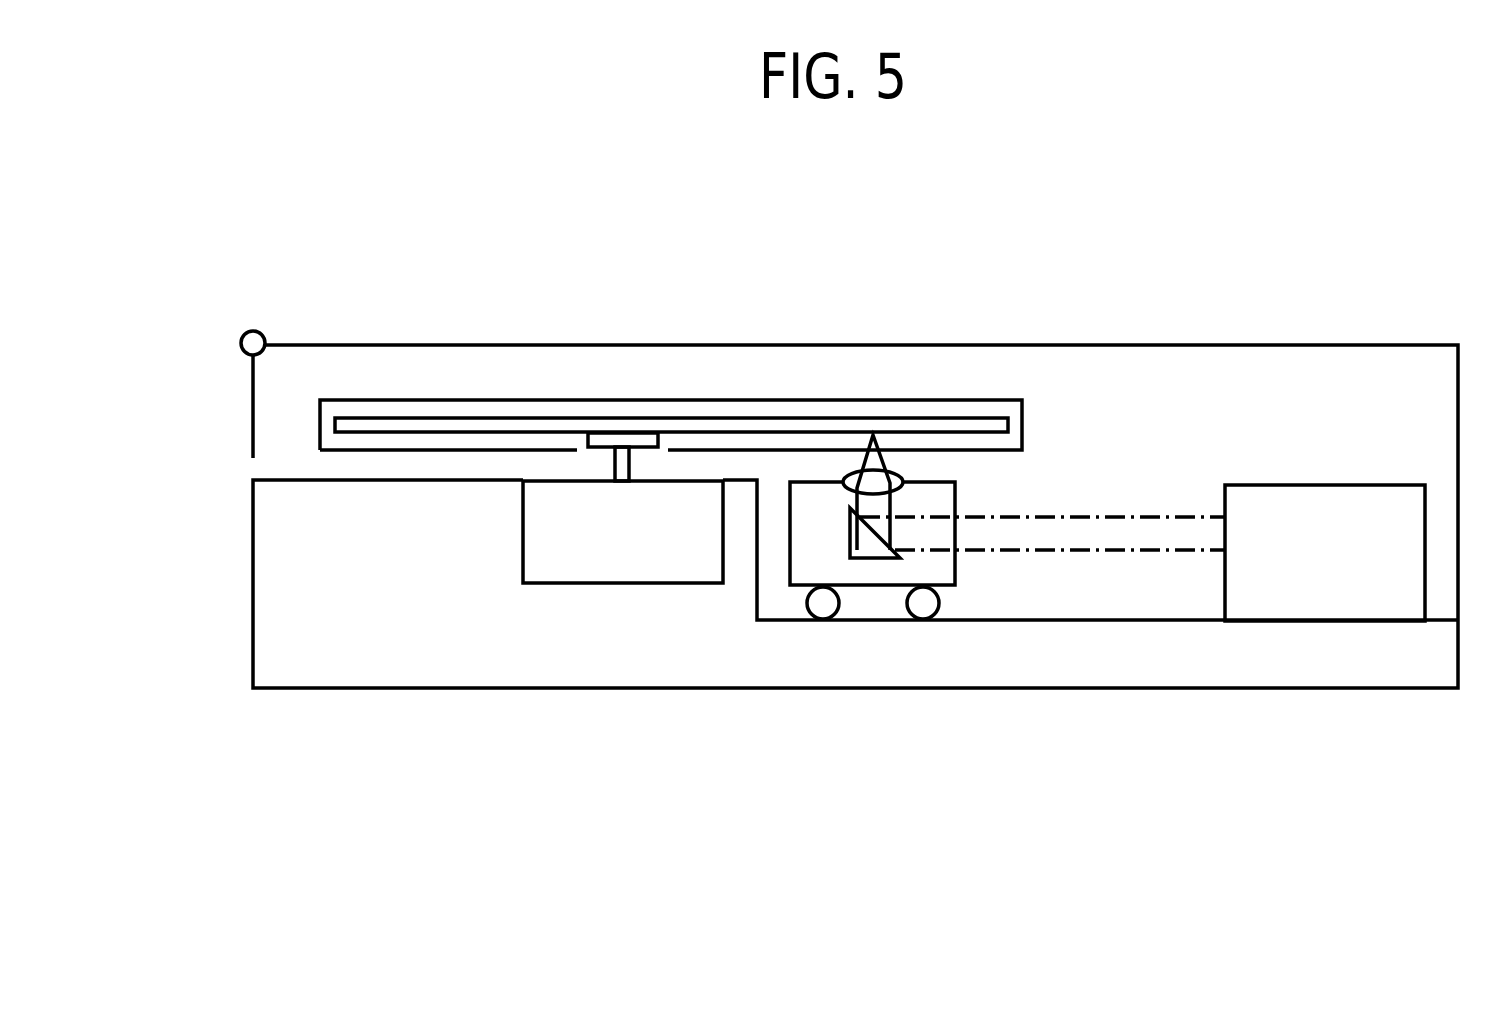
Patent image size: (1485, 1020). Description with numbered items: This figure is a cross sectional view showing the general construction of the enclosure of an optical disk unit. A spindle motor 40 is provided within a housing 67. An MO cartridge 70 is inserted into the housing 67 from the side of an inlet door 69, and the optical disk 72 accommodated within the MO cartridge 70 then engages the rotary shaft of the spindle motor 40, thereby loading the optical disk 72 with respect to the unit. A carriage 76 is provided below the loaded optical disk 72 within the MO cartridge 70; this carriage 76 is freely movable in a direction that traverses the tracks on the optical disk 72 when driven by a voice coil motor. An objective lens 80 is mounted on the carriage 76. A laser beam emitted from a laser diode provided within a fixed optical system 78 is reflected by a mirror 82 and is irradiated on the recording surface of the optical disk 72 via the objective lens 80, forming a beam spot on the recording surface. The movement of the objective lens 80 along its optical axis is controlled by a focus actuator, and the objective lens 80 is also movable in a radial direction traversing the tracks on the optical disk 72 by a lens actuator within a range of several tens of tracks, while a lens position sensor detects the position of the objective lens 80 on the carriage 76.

The spindle motor 40 is at (693, 584).
The housing 67 is at (1250, 347).
The inlet door 69 is at (253, 423).
The MO cartridge 70 is at (473, 400).
The optical disk 72 is at (883, 425).
The carriage 76 is at (887, 585).
The fixed optical system 78 is at (1380, 485).
The objective lens 80 is at (898, 473).
The mirror 82 is at (848, 535).